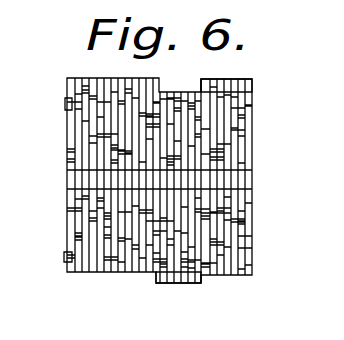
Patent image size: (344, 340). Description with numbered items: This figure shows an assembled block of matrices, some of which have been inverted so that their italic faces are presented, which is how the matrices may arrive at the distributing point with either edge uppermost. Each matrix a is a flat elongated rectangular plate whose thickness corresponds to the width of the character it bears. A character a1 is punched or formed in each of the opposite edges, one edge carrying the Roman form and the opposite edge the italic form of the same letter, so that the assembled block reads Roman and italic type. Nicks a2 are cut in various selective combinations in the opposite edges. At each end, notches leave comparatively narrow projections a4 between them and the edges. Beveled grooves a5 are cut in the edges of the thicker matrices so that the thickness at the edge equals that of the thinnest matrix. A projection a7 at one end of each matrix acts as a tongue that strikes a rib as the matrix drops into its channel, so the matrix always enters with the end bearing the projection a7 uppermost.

The matrix a is at (252, 212).
The character a1 is at (252, 183).
The nicks a2 is at (250, 242).
The projections a4 is at (64, 258).
The beveled grooves a5 is at (65, 104).
The projection a7 is at (207, 285).